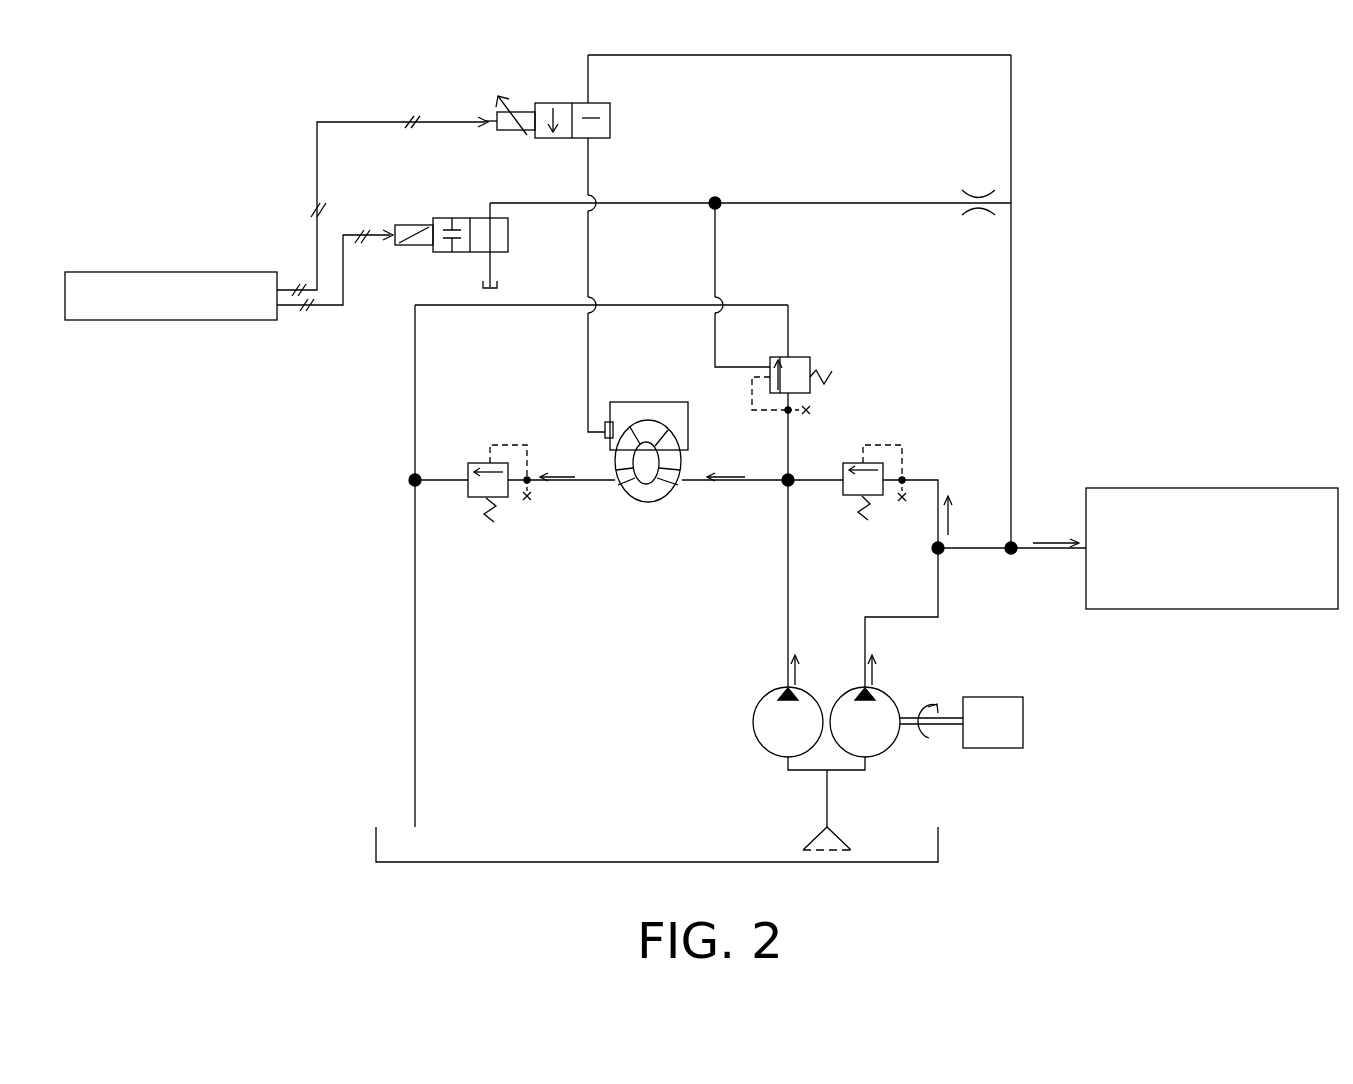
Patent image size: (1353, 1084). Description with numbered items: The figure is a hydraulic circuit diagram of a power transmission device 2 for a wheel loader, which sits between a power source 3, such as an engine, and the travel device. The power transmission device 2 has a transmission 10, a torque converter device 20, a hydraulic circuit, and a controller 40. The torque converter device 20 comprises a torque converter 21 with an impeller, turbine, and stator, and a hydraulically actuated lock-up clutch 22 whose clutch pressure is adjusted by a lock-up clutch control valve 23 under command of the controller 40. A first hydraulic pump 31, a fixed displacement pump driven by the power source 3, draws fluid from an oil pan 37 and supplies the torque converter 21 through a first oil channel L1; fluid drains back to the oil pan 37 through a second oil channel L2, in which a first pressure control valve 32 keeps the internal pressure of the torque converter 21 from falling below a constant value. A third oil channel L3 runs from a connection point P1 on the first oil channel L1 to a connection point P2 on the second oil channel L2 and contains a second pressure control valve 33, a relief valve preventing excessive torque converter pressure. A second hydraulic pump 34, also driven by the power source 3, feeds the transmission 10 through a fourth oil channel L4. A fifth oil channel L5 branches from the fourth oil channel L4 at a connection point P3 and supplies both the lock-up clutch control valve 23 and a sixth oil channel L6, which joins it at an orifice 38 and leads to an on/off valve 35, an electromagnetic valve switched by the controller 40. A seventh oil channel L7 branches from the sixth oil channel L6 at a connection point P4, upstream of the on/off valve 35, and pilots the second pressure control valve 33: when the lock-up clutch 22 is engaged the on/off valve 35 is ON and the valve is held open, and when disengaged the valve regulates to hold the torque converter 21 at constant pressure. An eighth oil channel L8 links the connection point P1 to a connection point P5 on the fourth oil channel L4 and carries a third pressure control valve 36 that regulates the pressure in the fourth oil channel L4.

The power transmission device 2 is at (1252, 157).
The power source 3 is at (1020, 697).
The transmission 10 is at (1285, 488).
The torque converter device 20 is at (697, 354).
The torque converter 21 is at (660, 421).
The lock-up clutch 22 is at (625, 420).
The lock-up clutch control valve 23 is at (532, 103).
The first hydraulic pump 31 is at (762, 700).
The first pressure control valve 32 is at (482, 500).
The second pressure control valve 33 is at (800, 357).
The second hydraulic pump 34 is at (893, 700).
The on/off valve 35 is at (452, 218).
The third pressure control valve 36 is at (843, 488).
The oil pan 37 is at (940, 835).
The orifice 38 is at (975, 196).
The controller 40 is at (185, 272).
The first oil channel L1 is at (786, 490).
The second oil channel L2 is at (416, 750).
The third oil channel L3 is at (497, 306).
The fourth oil channel L4 is at (976, 553).
The fifth oil channel L5 is at (1012, 330).
The sixth oil channel L6 is at (716, 202).
The seventh oil channel L7 is at (716, 240).
The eighth oil channel L8 is at (938, 480).
The connection point P1 is at (791, 478).
The connection point P2 is at (412, 477).
The connection point P3 is at (1013, 552).
The connection point P4 is at (712, 207).
The connection point P5 is at (935, 550).